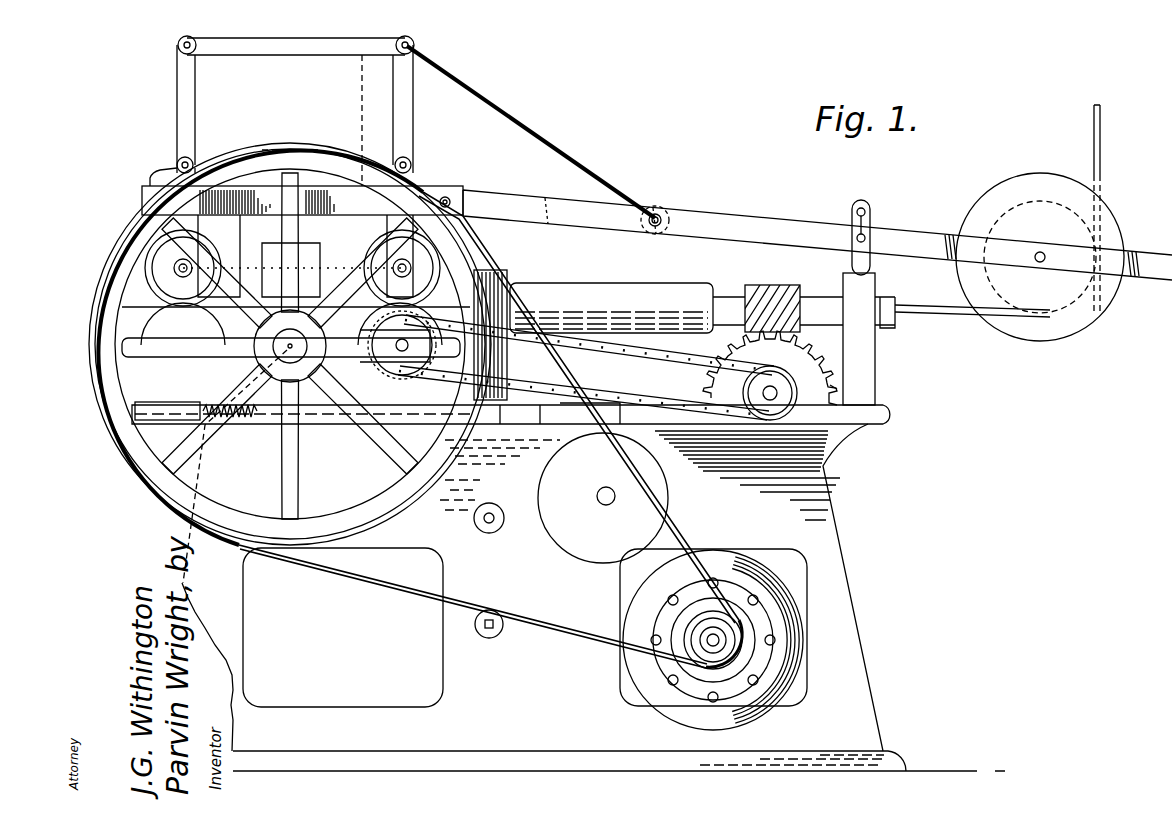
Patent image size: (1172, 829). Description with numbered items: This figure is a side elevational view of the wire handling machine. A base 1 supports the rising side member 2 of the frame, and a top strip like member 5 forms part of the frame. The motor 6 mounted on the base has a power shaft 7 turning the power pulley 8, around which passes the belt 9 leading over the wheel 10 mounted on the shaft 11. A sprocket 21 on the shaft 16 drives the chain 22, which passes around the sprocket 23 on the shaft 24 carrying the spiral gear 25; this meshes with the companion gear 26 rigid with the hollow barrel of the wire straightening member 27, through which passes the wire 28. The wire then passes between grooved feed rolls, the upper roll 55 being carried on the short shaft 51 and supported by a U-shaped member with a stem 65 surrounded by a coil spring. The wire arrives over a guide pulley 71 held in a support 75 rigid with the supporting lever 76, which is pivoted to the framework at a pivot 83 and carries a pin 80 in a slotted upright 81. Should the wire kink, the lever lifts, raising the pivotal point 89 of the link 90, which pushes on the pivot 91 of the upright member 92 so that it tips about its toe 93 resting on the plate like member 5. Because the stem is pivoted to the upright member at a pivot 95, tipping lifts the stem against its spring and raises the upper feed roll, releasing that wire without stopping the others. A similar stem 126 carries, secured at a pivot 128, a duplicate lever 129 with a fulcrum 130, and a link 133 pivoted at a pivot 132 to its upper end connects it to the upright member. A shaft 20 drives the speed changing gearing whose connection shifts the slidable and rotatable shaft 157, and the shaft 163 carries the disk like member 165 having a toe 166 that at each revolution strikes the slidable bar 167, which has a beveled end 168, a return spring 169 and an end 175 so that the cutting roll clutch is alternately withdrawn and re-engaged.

The base 1 is at (858, 751).
The side member 2 is at (843, 629).
The top strip like member 5 is at (385, 208).
The motor 6 is at (738, 562).
The power shaft 7 is at (707, 625).
The power pulley 8 is at (707, 608).
The belt 9 is at (92, 352).
The wheel 10 is at (123, 256).
The shaft 11 is at (272, 358).
The shaft 16 is at (400, 374).
The shaft 20 is at (486, 519).
The sprocket 21 is at (424, 358).
The driving chain 22 is at (690, 352).
The sprocket 23 is at (770, 368).
The shaft 24 is at (772, 390).
The spiral gear 25 is at (820, 388).
The companion gear 26 is at (764, 286).
The wire straightening member 27 is at (627, 286).
The wire 28 is at (1100, 142).
The short shaft 51 is at (405, 268).
The grooved feed roll 55 is at (428, 264).
The stem 65 is at (418, 174).
The guide pulley 71 is at (1029, 175).
The support 75 is at (1108, 258).
The supporting lever 76 is at (742, 224).
The pin 80 is at (872, 248).
The slotted upright 81 is at (866, 208).
The pivot 83 is at (450, 202).
The pivotal point 89 is at (656, 215).
The connecting member or link 90 is at (563, 150).
The pivot 91 is at (412, 42).
The upright member 92 is at (394, 94).
The toe 93 is at (362, 170).
The pivot 95 is at (410, 163).
The stem 126 is at (300, 160).
The pivot 128 is at (190, 162).
The lever 129 is at (190, 104).
The fulcrum 130 is at (158, 178).
The pivot 132 is at (236, 22).
The link 133 is at (312, 46).
The slidable and rotatable shaft 157 is at (490, 633).
The shaft 163 is at (604, 505).
The disk like member 165 is at (563, 530).
The toe 166 is at (615, 423).
The slidable bar 167 is at (322, 418).
The beveled end 168 is at (255, 360).
The return spring 169 is at (212, 406).
The end 175 is at (603, 418).